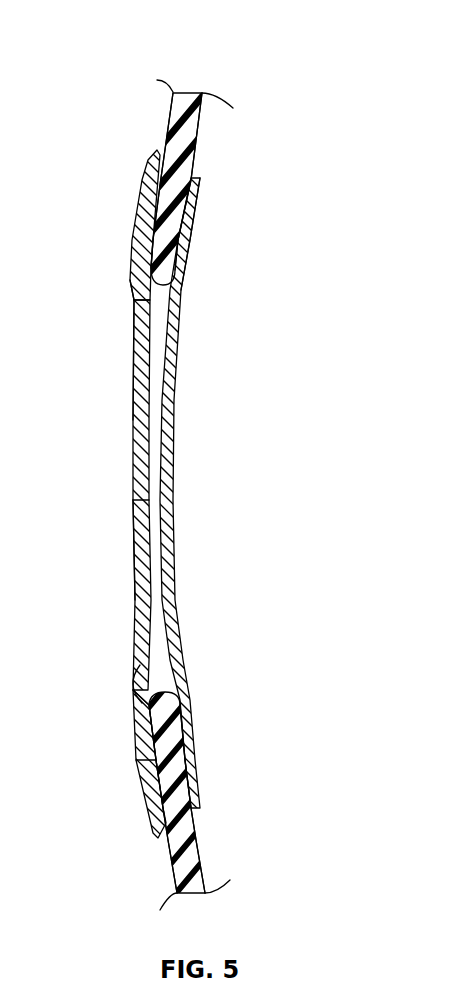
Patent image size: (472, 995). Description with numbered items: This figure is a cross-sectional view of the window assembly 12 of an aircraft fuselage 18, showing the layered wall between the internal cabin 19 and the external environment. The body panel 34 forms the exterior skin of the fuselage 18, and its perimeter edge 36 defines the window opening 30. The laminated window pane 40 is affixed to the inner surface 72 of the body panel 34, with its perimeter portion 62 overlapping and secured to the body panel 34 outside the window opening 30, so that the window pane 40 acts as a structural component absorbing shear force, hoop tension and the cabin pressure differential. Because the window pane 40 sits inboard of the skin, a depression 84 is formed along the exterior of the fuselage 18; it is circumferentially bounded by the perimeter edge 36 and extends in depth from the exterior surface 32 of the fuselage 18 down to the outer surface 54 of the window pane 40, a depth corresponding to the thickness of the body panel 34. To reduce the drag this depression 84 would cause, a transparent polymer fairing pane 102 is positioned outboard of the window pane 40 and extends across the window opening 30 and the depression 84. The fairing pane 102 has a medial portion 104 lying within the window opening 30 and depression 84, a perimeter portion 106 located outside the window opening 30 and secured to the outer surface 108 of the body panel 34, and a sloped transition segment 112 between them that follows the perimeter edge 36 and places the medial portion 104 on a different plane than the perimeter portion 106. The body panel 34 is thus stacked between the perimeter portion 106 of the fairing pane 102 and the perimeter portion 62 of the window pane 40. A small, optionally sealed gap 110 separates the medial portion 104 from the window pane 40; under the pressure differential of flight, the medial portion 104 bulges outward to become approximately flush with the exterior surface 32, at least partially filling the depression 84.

The window assembly 12 is at (55, 181).
The fuselage 18 is at (172, 96).
The internal cabin 19 is at (243, 438).
The window opening 30 is at (119, 297).
The exterior surface 32 is at (164, 131).
The body panel 34 is at (168, 116).
The perimeter edge 36 is at (145, 690).
The window pane 40 is at (175, 535).
The outer surface of the window pane 54 is at (160, 445).
The perimeter portion of the window pane 62 is at (204, 259).
The inner surface of the body panel 72 is at (190, 225).
The depression 84 is at (121, 347).
The fairing pane 102 is at (135, 548).
The medial portion 104 is at (112, 589).
The perimeter portion of the fairing pane 106 is at (133, 205).
The outer surface of the body panel 108 is at (140, 738).
The gap 110 is at (132, 507).
The sloped transition segment 112 is at (140, 700).